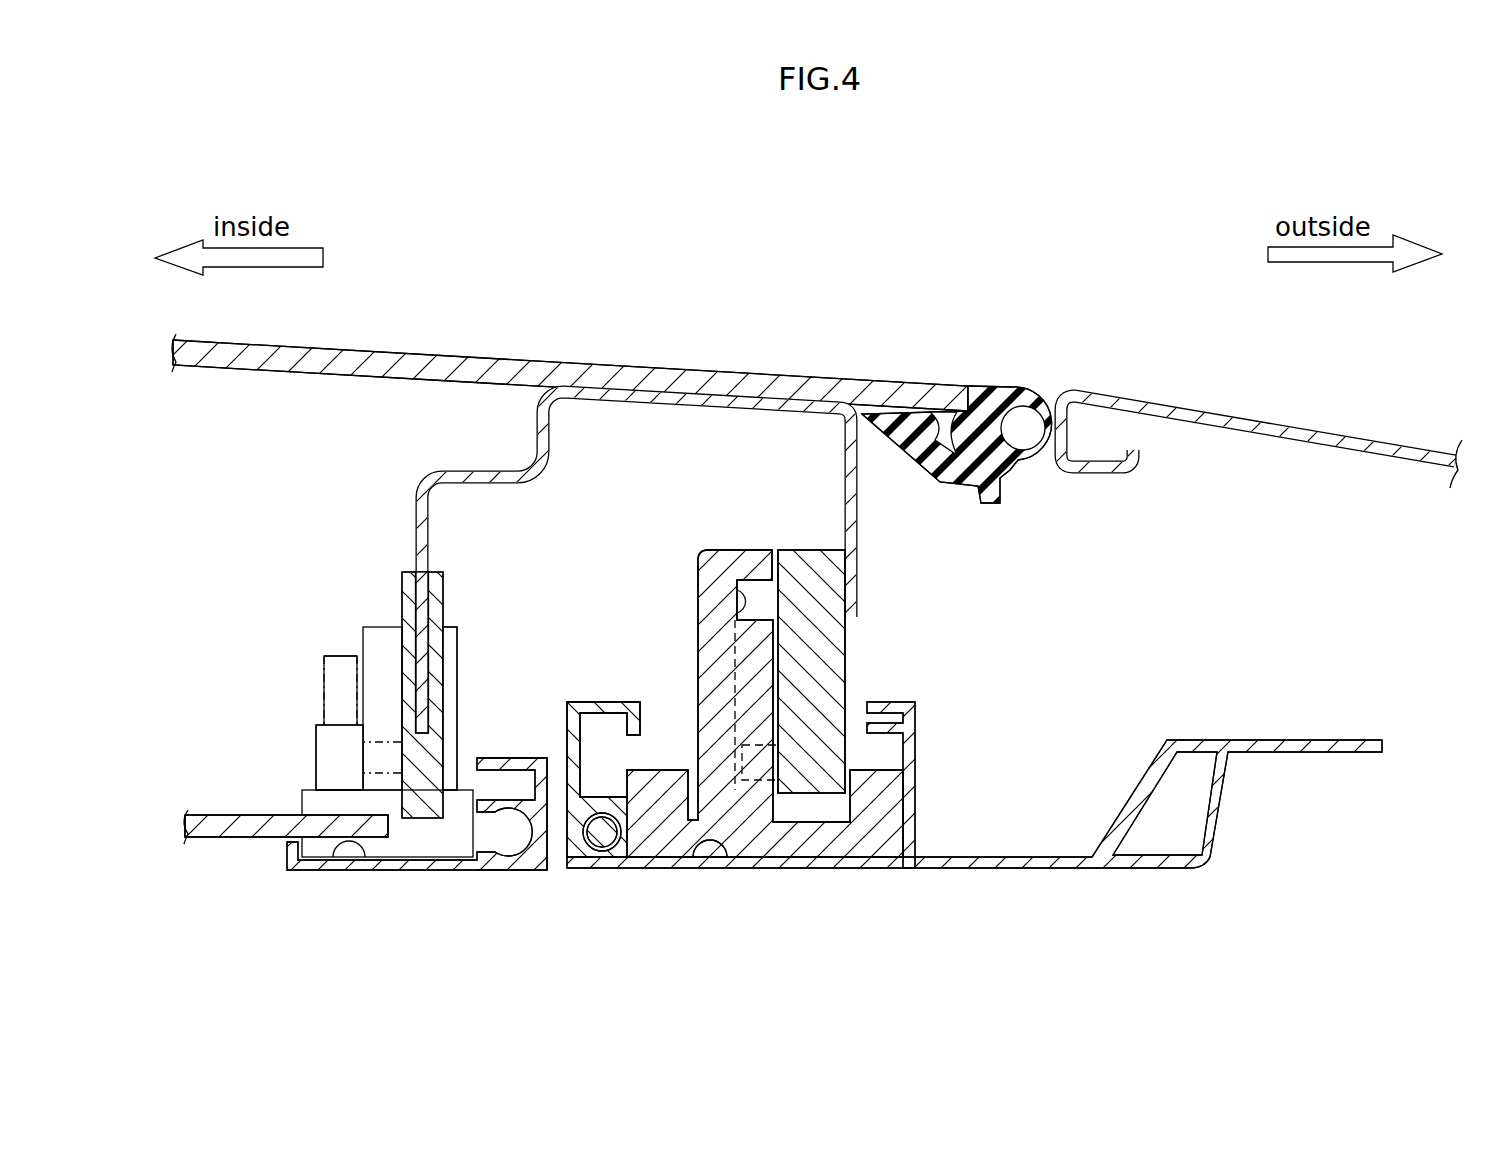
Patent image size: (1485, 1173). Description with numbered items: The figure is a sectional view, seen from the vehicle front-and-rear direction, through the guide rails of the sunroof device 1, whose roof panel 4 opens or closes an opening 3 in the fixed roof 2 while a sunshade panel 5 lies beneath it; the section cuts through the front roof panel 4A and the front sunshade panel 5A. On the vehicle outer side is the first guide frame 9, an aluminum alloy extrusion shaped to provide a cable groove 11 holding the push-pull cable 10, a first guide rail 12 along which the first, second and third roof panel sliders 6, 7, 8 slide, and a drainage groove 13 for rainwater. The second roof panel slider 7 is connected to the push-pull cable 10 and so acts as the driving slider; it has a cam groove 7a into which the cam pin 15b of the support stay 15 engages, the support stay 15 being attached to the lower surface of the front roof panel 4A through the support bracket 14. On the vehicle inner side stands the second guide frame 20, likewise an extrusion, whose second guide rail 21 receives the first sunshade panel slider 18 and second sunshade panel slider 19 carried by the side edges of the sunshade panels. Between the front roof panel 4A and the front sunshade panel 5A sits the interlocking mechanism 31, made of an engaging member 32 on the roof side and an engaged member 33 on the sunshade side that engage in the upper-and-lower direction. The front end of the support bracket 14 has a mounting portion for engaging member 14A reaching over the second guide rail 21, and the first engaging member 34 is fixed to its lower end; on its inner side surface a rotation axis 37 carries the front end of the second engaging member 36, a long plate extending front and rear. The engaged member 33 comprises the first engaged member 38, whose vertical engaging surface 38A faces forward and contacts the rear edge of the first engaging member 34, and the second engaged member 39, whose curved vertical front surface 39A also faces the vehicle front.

The sunroof device 1 is at (933, 285).
The fixed roof 2 is at (1230, 415).
The opening 3 is at (1047, 405).
The roof panel 4 is at (343, 357).
The front roof panel 4A is at (570, 345).
The sunshade panel 5 is at (215, 820).
The front sunshade panel 5A is at (244, 784).
The first roof panel slider 6 is at (765, 748).
The second roof panel slider 7 is at (765, 748).
The cam groove 7a is at (742, 600).
The third roof panel slider 8 is at (790, 840).
The first guide frame 9 is at (974, 857).
The push-pull cable 10 is at (622, 860).
The cable groove 11 is at (585, 870).
The first guide rail 12 is at (710, 848).
The drainage groove 13 is at (951, 886).
The support bracket 14 is at (470, 472).
The mounting portion for engaging member 14A is at (635, 560).
The support stay of panel 15 is at (813, 553).
The cam pin 15b is at (745, 760).
The first sunshade panel slider 18 is at (387, 868).
The second sunshade panel slider 19 is at (418, 840).
The second guide frame 20 is at (493, 875).
The second guide rail 21 is at (360, 860).
The interlocking mechanism 31 is at (302, 565).
The engaging member 32 is at (445, 605).
The engaged member 33 is at (458, 652).
The first engaging member 34 is at (477, 695).
The second engaging member 36 is at (324, 670).
The rotation axis 37 is at (397, 740).
The first engaged member 38 is at (508, 703).
The engaging surface 38A is at (455, 703).
The second engaged member 39 is at (316, 748).
The front surface 39A is at (316, 782).